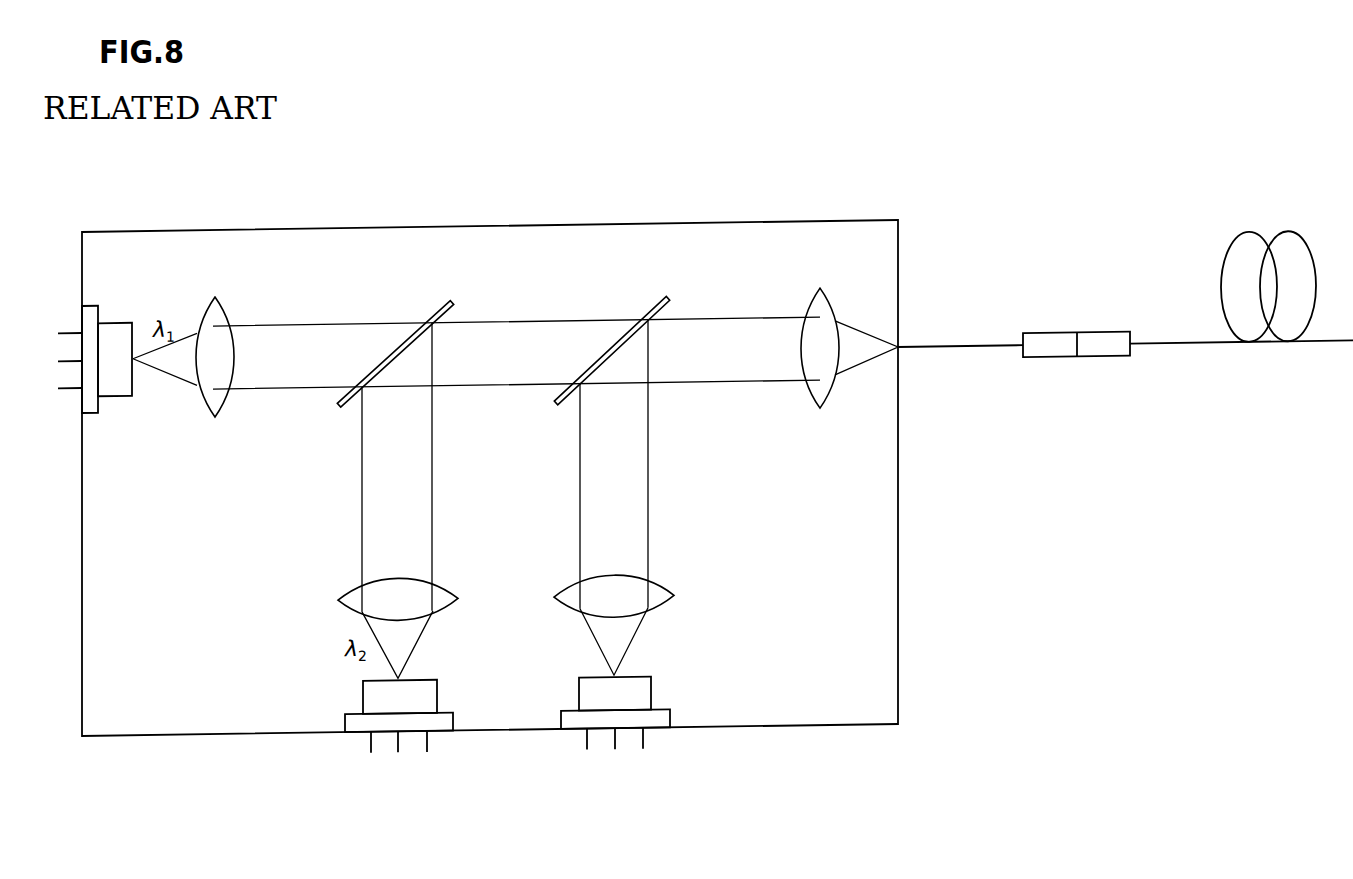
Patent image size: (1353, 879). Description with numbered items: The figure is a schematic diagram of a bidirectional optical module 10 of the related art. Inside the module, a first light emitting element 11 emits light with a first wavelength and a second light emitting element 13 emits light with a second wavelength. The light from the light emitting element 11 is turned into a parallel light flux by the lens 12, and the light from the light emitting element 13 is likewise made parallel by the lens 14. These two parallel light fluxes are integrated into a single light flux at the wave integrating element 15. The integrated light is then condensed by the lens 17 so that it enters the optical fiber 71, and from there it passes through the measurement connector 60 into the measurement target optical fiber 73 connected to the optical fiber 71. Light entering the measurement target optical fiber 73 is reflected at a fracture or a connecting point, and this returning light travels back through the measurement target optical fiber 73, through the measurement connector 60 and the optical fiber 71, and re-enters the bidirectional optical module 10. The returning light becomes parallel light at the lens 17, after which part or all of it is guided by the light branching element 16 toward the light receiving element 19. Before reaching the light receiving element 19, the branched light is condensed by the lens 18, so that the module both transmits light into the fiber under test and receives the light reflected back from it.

The bidirectional optical module 10 is at (765, 230).
The light emitting element 11 is at (118, 398).
The lens 12 is at (222, 310).
The light emitting element 13 is at (363, 701).
The lens 14 is at (352, 594).
The wave integrating element 15 is at (440, 307).
The light branching element 16 is at (657, 304).
The lens 17 is at (828, 298).
The lens 18 is at (662, 592).
The light receiving element 19 is at (652, 698).
The measurement connector 60 is at (1050, 347).
The optical fiber 71 is at (962, 361).
The measurement target optical fiber 73 is at (1328, 361).